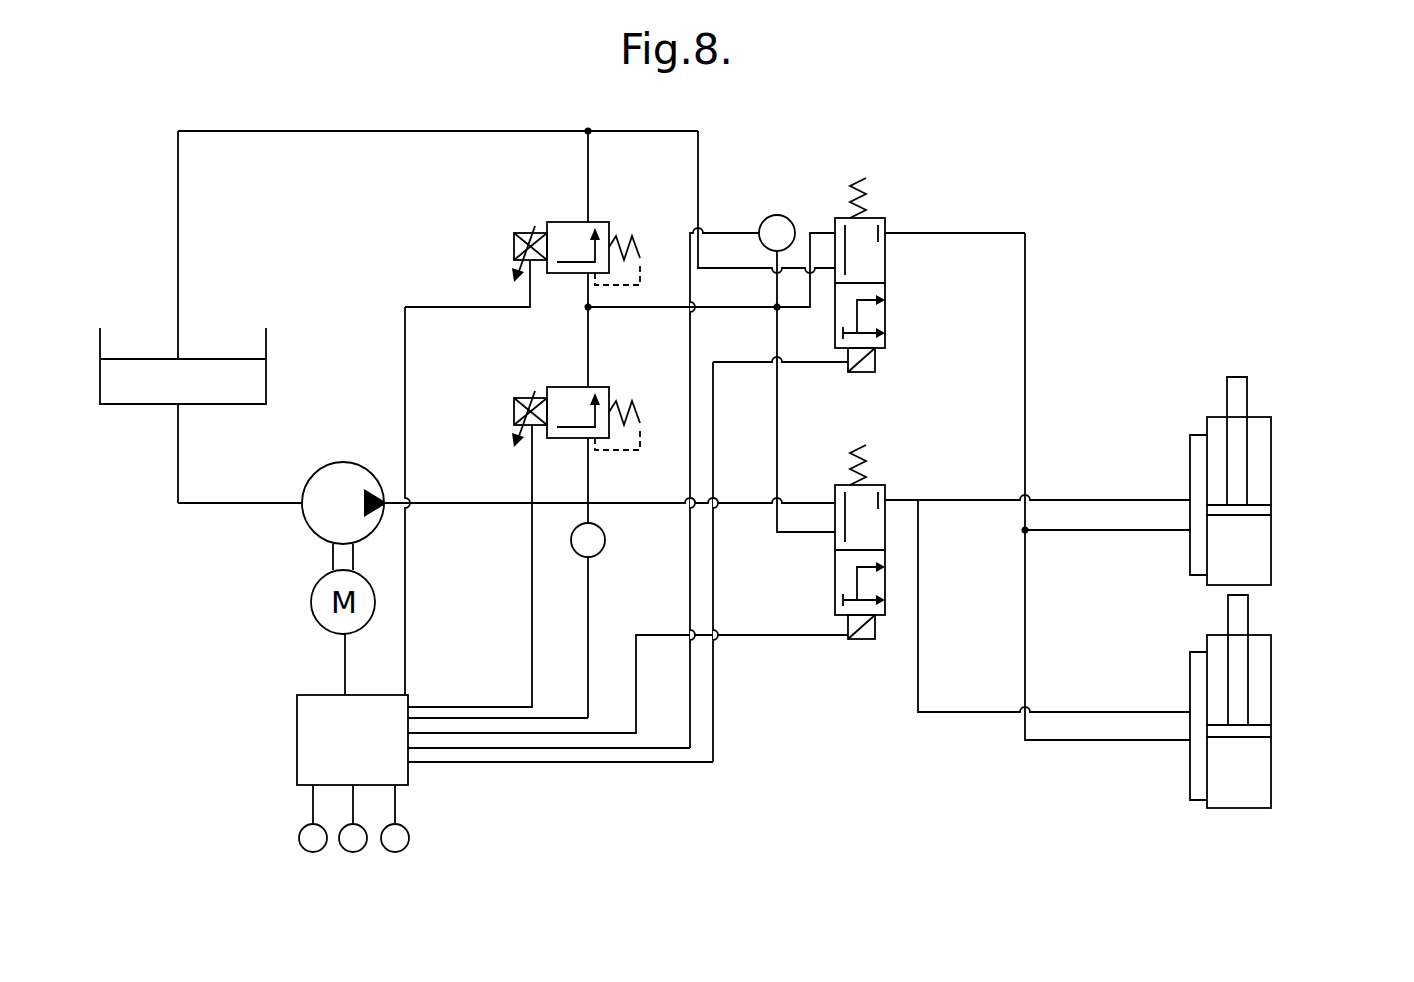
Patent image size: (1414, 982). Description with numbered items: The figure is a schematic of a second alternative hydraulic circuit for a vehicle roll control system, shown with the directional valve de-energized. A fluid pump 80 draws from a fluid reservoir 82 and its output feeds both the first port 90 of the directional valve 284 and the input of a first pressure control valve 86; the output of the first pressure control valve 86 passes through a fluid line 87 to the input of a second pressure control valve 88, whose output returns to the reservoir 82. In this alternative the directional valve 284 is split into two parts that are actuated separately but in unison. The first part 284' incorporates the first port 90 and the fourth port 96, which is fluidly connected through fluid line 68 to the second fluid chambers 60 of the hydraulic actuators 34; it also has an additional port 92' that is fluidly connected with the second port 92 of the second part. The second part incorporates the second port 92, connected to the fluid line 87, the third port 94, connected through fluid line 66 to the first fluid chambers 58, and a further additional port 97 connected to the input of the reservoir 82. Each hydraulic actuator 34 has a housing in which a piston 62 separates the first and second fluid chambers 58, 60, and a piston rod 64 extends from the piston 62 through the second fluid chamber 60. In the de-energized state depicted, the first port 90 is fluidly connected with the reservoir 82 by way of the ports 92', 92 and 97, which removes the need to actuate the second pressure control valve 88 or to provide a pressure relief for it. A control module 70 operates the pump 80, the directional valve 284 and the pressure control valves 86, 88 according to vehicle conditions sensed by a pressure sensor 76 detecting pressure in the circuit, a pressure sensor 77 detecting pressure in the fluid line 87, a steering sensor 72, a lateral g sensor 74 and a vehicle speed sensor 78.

The hydraulic actuator 34 is at (1302, 595).
The first fluid chamber 58 is at (1262, 567).
The second fluid chamber 60 is at (1262, 453).
The piston 62 is at (1265, 510).
The piston rod 64 is at (1242, 391).
The fluid line 66 is at (1150, 532).
The fluid line 68 is at (1148, 498).
The control module 70 is at (305, 738).
The steering sensor 72 is at (302, 843).
The lateral g sensor 74 is at (348, 851).
The pressure sensor 76 is at (606, 545).
The pressure sensor 77 is at (777, 215).
The vehicle speed sensor 78 is at (395, 852).
The fluid pump 80 is at (313, 539).
The fluid reservoir 82 is at (140, 388).
The first pressure control valve 86 is at (605, 387).
The fluid line 87 is at (588, 348).
The second pressure control valve 88 is at (605, 222).
The first port 90 is at (835, 485).
The second port 92 is at (846, 265).
The additional port 92' is at (805, 542).
The third port 94 is at (887, 240).
The fourth port 96 is at (888, 500).
The additional port 97 is at (833, 288).
The directional valve 284 is at (900, 448).
The first part of the directional valve 284' is at (919, 156).